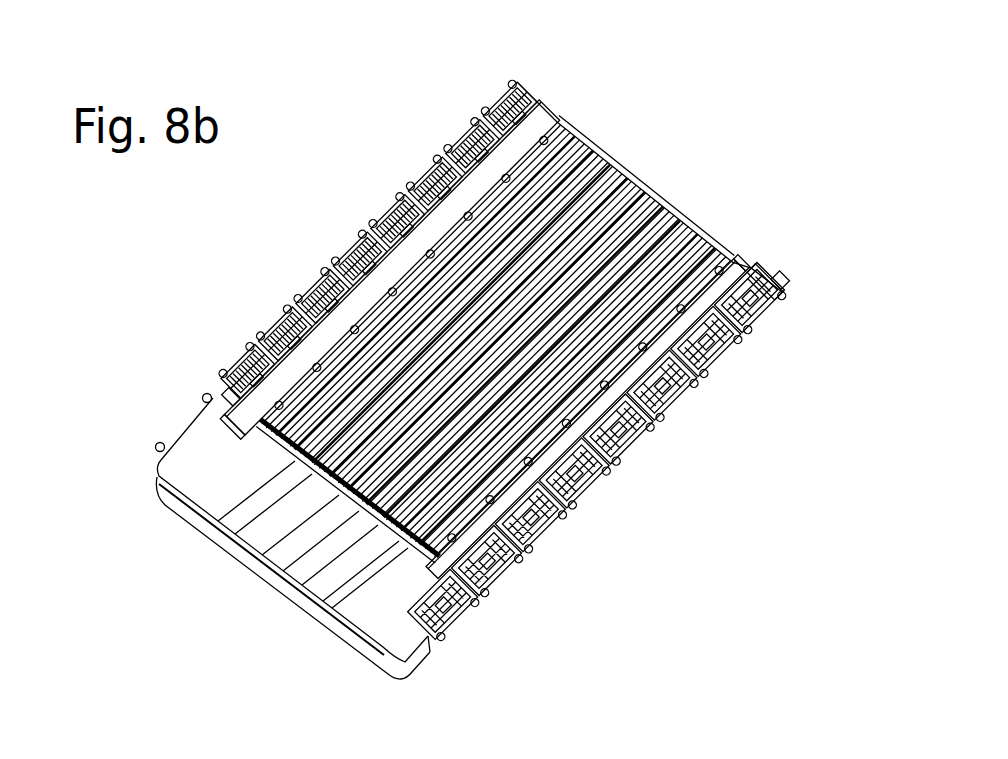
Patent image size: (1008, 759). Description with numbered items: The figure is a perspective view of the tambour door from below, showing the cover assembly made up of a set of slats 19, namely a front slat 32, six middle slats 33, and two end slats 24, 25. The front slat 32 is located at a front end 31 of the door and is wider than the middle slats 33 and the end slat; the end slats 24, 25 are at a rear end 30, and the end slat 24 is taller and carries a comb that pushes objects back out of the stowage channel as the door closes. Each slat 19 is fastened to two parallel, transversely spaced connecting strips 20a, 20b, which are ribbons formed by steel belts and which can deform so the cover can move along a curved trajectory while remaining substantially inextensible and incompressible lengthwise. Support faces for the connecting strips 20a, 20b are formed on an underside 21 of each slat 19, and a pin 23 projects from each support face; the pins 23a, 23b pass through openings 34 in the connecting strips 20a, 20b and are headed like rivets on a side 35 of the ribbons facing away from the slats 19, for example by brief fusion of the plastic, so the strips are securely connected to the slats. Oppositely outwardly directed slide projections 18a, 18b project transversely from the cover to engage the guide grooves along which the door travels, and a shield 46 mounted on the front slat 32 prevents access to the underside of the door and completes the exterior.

The slide projection 18a is at (786, 294).
The slide projection 18b is at (492, 99).
The slat 19 is at (683, 207).
The connecting strip 20a is at (546, 520).
The connecting strip 20b is at (328, 328).
The underside 21 is at (612, 155).
The pin 23 is at (240, 400).
The pin 23a is at (705, 398).
The pin 23b is at (482, 128).
The end slat 24 is at (735, 320).
The end slat 25 is at (760, 281).
The rear end 30 is at (596, 120).
The front end 31 is at (220, 569).
The front slat 32 is at (163, 443).
The middle slat 33 is at (340, 312).
The opening 34 is at (230, 395).
The side 35 is at (300, 355).
The shield 46 is at (215, 467).